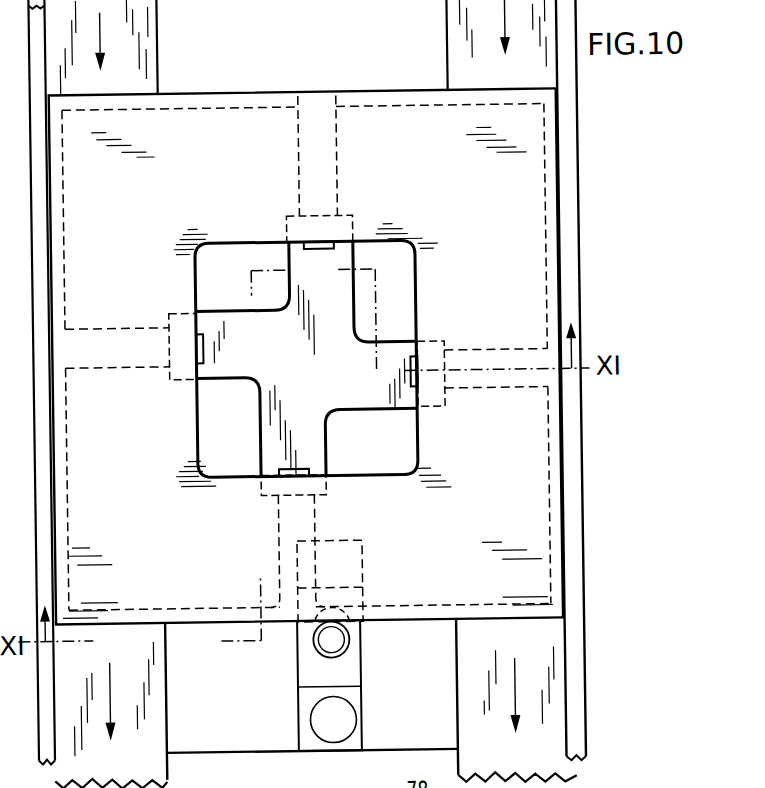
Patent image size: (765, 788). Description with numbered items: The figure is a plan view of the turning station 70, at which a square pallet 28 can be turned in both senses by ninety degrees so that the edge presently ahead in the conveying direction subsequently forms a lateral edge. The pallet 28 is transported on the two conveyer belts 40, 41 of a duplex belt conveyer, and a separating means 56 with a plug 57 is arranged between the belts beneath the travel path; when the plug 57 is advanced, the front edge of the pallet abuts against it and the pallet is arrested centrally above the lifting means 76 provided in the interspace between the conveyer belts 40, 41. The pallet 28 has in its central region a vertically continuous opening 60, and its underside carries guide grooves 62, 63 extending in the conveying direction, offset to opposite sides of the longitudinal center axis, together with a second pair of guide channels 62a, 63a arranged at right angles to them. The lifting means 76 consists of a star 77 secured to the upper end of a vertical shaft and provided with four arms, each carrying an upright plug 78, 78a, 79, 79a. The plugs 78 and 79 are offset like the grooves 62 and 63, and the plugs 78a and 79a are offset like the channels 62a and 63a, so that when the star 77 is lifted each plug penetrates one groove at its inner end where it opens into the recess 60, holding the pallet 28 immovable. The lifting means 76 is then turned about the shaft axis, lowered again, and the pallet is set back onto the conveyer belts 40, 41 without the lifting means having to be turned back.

The pallet 28 is at (485, 86).
The conveyer belt 40 is at (148, 54).
The conveyer belt 41 is at (463, 43).
The separating means 56 is at (368, 691).
The plug 57 is at (328, 640).
The opening 60 is at (200, 282).
The guide groove 62 is at (306, 512).
The guide channel 62a is at (500, 352).
The guide groove 63 is at (338, 130).
The guide channel 63a is at (113, 322).
The turning station 70 is at (587, 152).
The lifting means 76 is at (372, 325).
The star 77 is at (358, 394).
The plug 78 is at (292, 487).
The plug 78a is at (428, 382).
The plug 79 is at (320, 229).
The plug 79a is at (182, 338).